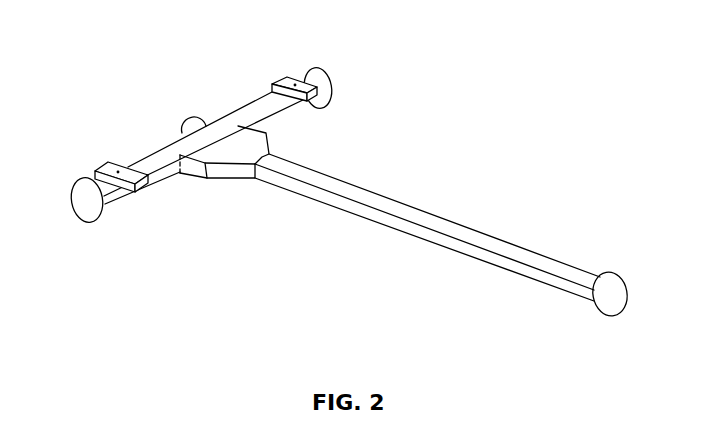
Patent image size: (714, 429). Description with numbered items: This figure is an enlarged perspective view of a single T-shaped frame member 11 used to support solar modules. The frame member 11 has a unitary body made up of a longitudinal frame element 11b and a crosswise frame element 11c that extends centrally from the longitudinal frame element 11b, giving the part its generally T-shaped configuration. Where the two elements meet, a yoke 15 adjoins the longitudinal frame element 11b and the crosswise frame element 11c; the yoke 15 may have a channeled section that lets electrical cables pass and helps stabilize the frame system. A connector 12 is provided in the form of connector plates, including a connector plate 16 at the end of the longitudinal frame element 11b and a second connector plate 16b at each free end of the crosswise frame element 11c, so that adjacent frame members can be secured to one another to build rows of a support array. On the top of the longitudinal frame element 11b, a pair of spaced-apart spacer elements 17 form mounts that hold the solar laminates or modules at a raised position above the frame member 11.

The frame member 11 is at (91, 97).
The longitudinal frame element 11b is at (448, 248).
The crosswise frame element 11c is at (122, 204).
The connector 12 is at (617, 298).
The yoke 15 is at (221, 174).
The connector plate 16 is at (612, 290).
The second connector plate 16b is at (81, 203).
The spacer element 17 is at (103, 166).